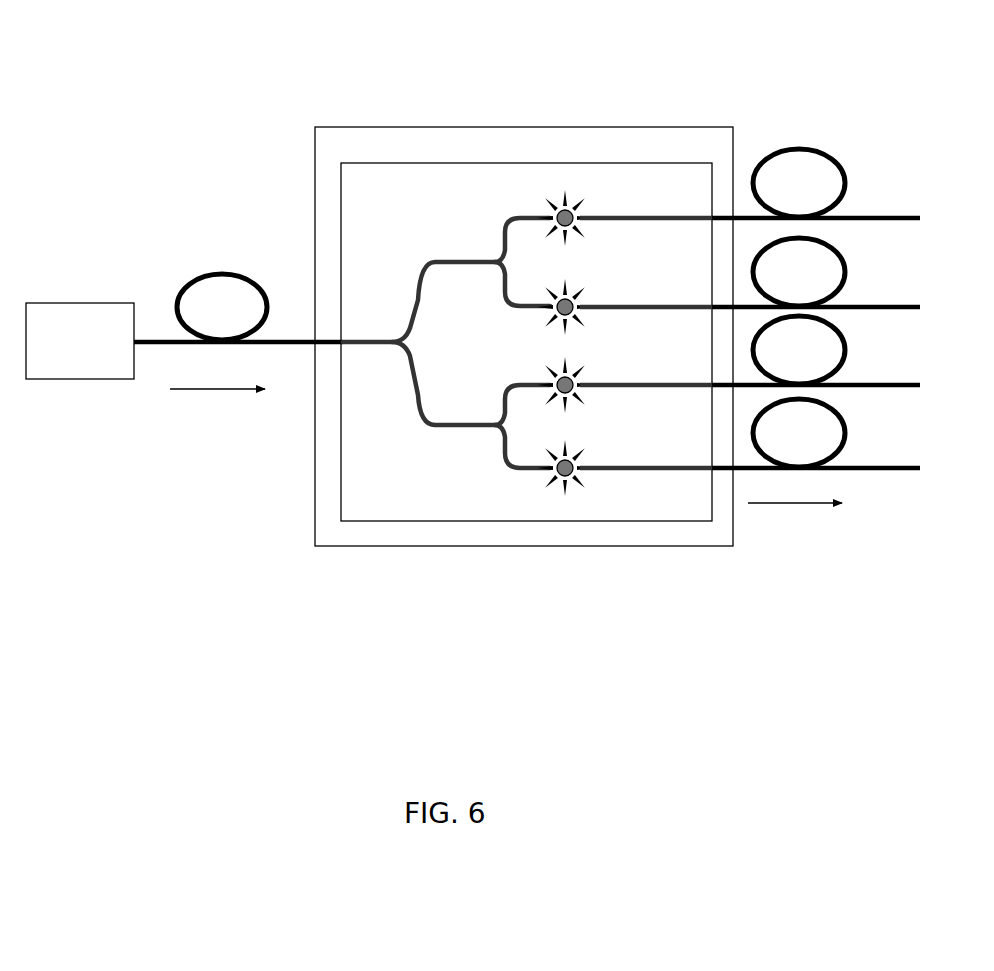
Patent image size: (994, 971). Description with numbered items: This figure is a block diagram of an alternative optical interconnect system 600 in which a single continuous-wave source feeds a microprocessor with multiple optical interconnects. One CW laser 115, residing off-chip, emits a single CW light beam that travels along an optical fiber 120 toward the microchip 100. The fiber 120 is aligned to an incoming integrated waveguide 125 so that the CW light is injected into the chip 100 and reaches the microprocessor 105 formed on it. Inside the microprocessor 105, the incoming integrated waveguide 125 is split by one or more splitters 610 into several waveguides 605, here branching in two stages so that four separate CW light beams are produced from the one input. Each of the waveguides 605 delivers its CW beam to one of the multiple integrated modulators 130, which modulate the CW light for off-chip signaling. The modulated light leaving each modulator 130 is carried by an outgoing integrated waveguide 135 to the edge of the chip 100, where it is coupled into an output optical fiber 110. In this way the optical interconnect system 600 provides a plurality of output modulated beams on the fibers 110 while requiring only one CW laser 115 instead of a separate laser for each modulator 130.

The alternative optical interconnect system 600 is at (272, 46).
The microchip 100 is at (493, 125).
The microprocessor 105 is at (570, 162).
The optical fibers 110 is at (845, 187).
The CW laser 115 is at (78, 380).
The optical fiber 120 is at (196, 284).
The incoming integrated waveguide 125 is at (349, 335).
The integrated modulators 130 is at (580, 228).
The outgoing integrated waveguides 135 is at (670, 313).
The waveguides 605 is at (520, 214).
The splitters 610 is at (484, 447).